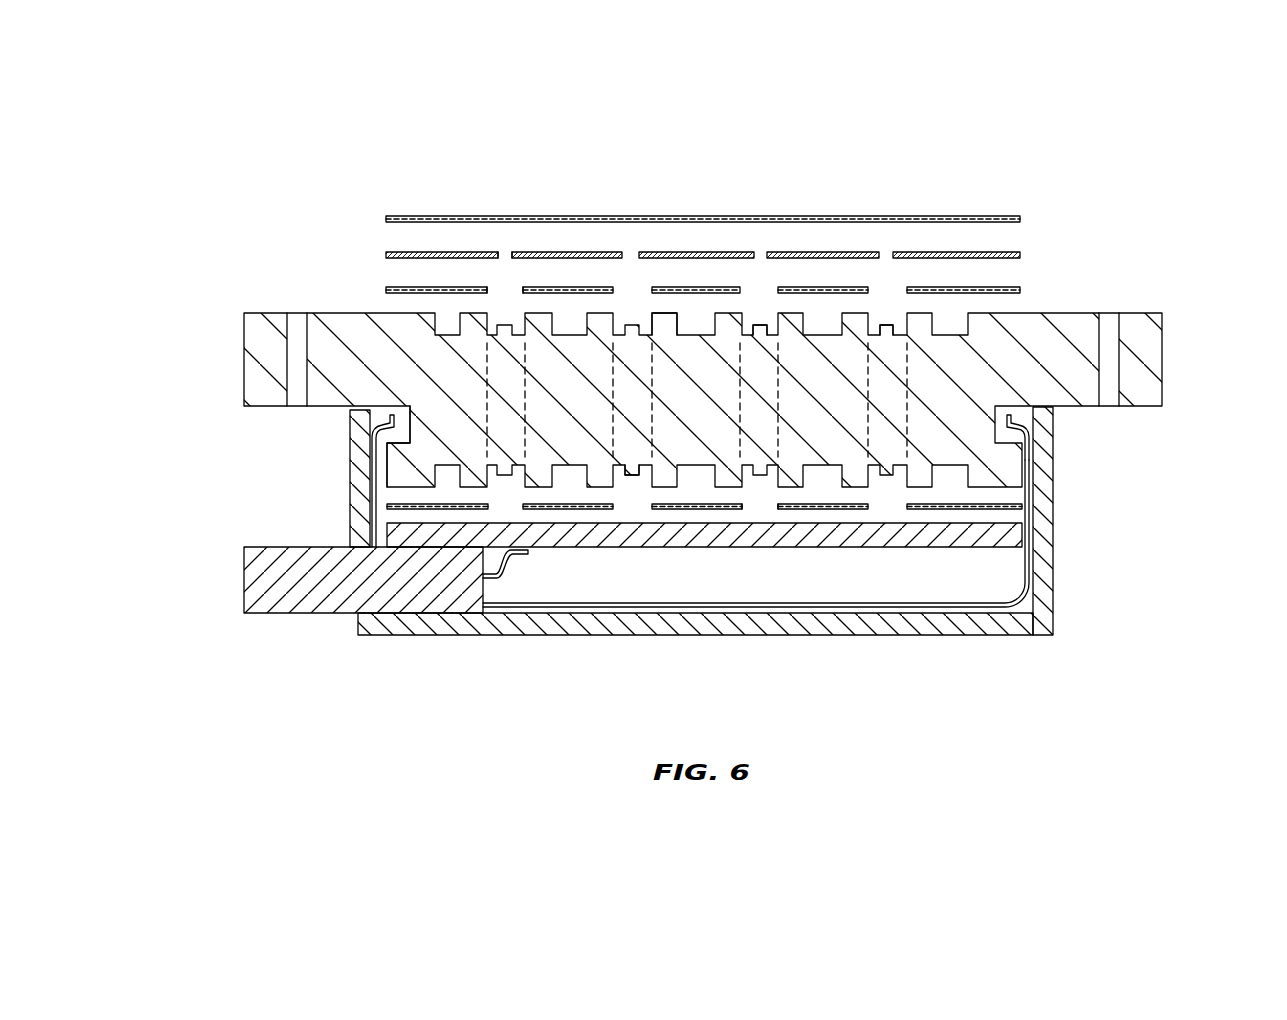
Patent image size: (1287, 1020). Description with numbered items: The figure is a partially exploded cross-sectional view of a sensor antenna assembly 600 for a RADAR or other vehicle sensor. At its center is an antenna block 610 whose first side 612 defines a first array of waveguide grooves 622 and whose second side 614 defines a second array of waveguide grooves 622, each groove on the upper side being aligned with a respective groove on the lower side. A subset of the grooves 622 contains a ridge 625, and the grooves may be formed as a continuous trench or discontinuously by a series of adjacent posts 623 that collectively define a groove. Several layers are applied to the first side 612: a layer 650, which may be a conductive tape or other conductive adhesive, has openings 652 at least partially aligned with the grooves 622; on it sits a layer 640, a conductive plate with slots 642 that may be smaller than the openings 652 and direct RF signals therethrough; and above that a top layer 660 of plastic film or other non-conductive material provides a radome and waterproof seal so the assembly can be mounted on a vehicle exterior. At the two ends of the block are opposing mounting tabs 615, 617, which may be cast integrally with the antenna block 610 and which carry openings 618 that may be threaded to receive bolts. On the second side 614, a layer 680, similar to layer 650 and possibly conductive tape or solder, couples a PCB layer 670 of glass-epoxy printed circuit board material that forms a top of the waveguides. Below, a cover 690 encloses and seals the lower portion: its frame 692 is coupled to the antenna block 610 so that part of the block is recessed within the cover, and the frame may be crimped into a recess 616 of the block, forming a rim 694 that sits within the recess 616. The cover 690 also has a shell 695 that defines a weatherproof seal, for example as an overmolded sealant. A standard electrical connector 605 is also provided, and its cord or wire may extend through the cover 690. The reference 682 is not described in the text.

The sensor antenna assembly 600 is at (1097, 142).
The electrical connector 605 is at (305, 595).
The antenna block 610 is at (973, 432).
The first side 612 is at (347, 317).
The second side 614 is at (412, 487).
The mounting tab 615 is at (1153, 360).
The recess 616 is at (1030, 420).
The mounting tab 617 is at (255, 363).
The opening 618 is at (295, 310).
The waveguide groove 622 is at (758, 313).
The post 623 is at (663, 320).
The ridge 625 is at (890, 330).
The layer 640 is at (1020, 255).
The slot 642 is at (505, 243).
The layer 650 is at (1020, 290).
The opening 652 is at (627, 286).
The top layer 660 is at (1020, 219).
The PCB layer 670 is at (985, 543).
The layer 680 is at (1013, 510).
The gap in lower thin layer 682 is at (760, 512).
The cover 690 is at (1017, 648).
The frame 692 is at (925, 607).
The rim 694 is at (386, 426).
The shell 695 is at (355, 498).